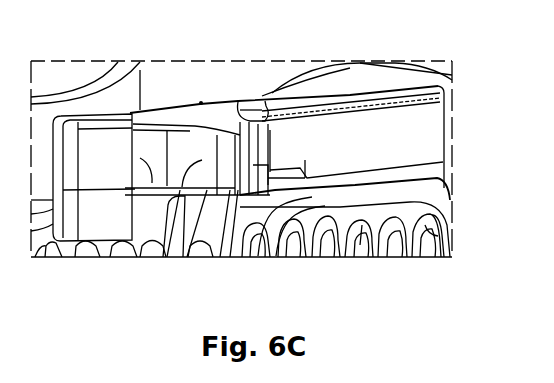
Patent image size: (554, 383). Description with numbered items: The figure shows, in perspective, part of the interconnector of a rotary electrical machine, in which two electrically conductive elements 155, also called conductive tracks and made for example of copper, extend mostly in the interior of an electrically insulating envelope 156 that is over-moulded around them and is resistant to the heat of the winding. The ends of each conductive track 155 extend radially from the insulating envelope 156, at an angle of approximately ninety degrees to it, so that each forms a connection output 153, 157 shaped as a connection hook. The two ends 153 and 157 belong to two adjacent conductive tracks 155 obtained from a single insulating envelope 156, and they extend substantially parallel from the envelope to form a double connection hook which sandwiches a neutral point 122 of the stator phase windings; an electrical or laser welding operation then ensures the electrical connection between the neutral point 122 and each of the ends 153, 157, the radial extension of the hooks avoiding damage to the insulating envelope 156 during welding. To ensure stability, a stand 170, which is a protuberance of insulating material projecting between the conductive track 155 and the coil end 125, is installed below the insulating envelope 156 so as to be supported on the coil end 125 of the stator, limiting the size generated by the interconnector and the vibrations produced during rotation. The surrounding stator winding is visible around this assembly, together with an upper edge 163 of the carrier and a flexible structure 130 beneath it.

The neutral point 122 is at (257, 172).
The coil end 125 is at (368, 245).
The flexible printed circuit 130 is at (448, 228).
The connection output 153 is at (306, 162).
The electrically conductive element 155 is at (242, 101).
The insulating envelope 156 is at (357, 97).
The connection output 157 is at (199, 194).
The upper edge of carrier 163 is at (203, 113).
The stand 170 is at (105, 213).